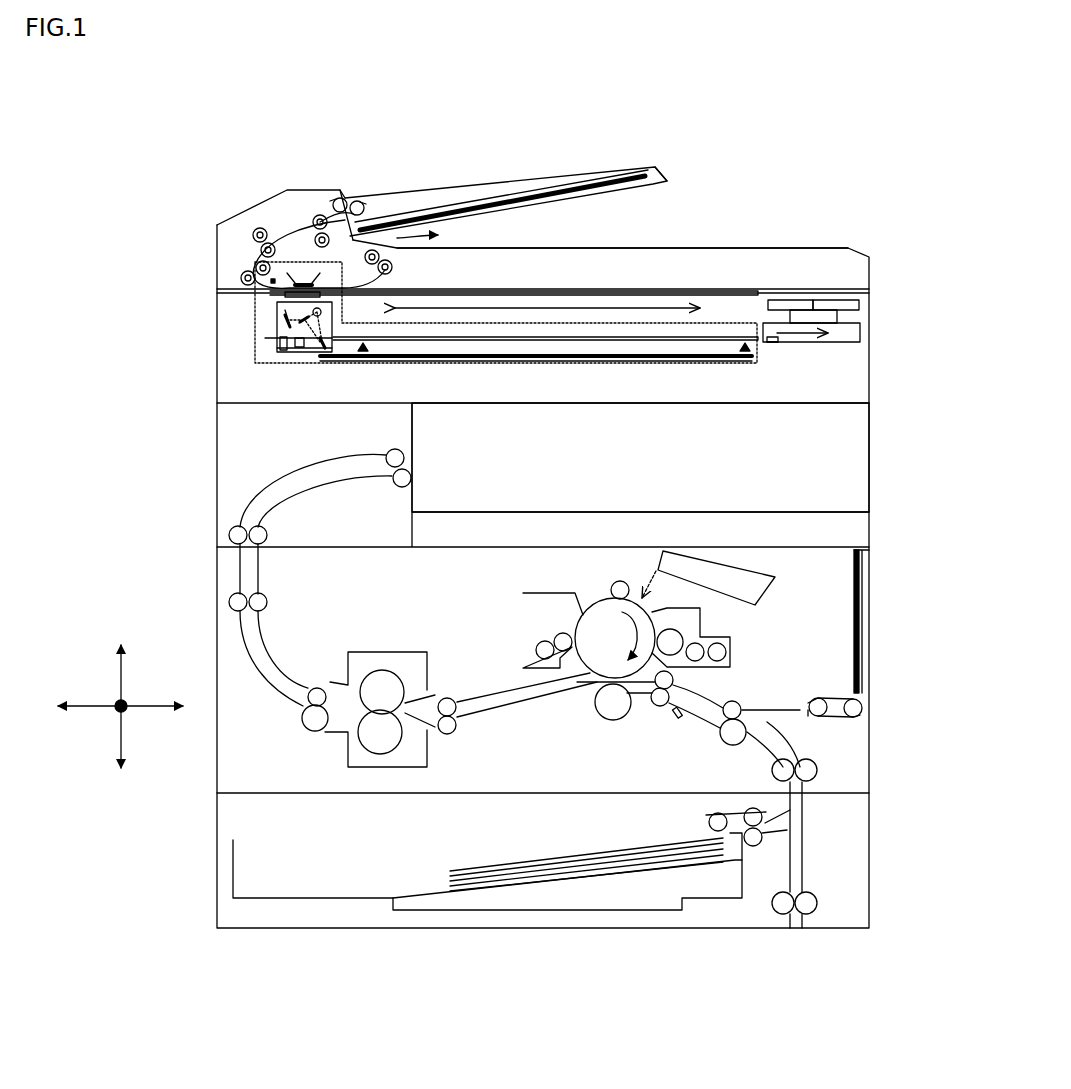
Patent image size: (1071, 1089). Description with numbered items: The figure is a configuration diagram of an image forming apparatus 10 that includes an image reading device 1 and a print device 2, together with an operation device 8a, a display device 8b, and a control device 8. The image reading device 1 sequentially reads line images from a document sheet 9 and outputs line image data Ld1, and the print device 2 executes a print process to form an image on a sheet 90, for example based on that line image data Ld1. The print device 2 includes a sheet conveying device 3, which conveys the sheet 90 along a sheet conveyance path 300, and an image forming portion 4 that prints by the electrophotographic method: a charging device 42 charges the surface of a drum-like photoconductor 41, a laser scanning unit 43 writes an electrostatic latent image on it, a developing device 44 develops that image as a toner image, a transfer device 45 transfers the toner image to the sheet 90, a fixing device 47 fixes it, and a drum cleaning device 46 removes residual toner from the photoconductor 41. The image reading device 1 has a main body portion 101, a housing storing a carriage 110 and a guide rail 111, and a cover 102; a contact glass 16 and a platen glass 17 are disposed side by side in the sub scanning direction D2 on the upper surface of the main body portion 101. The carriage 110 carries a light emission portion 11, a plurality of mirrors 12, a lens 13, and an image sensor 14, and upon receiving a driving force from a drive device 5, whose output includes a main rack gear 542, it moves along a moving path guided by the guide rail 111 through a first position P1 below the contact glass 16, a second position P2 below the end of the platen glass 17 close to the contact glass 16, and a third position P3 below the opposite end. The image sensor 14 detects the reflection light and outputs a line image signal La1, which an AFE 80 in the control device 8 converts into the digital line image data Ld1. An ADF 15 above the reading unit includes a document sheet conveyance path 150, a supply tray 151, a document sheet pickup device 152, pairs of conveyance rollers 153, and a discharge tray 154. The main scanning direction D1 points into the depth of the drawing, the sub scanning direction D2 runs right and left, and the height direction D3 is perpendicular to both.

The image reading device 1 is at (203, 197).
The print device 2 is at (880, 598).
The sheet conveying device 3 is at (830, 858).
The image forming portion 4 is at (332, 595).
The drive device 5 is at (255, 320).
The control device 8 is at (860, 338).
The operation device 8a is at (850, 292).
The display device 8b is at (860, 307).
The document sheet 9 is at (518, 192).
The image forming apparatus 10 is at (876, 156).
The light emission portion 11 is at (325, 348).
The mirrors 12 is at (317, 350).
The lens 13 is at (300, 350).
The image sensor 14 is at (283, 351).
The ADF 15 is at (264, 216).
The contact glass 16 is at (338, 278).
The platen glass 17 is at (733, 290).
The photoconductor 41 is at (598, 608).
The charging device 42 is at (626, 583).
The laser scanning unit 43 is at (773, 592).
The developing device 44 is at (703, 620).
The transfer device 45 is at (610, 722).
The drum cleaning device 46 is at (555, 594).
The fixing device 47 is at (330, 752).
The AFE 80 is at (780, 343).
The sheet 90 is at (522, 866).
The main body portion 101 is at (216, 386).
The cover 102 is at (217, 228).
The carriage 110 is at (277, 312).
The guide rail 111 is at (530, 340).
The document sheet conveyance path 150 is at (246, 262).
The supply tray 151 is at (667, 180).
The document sheet pickup device 152 is at (346, 200).
The conveyance rollers 153 is at (321, 214).
The discharge tray 154 is at (620, 247).
The sheet conveyance path 300 is at (710, 722).
The main rack gear 542 is at (498, 365).
The first position P1 is at (302, 370).
The second position P2 is at (367, 355).
The third position P3 is at (745, 355).
The line image data Ld1 is at (805, 335).
The line image signal La1 is at (770, 348).
The main scanning direction D1 is at (119, 700).
The sub scanning direction D2 is at (87, 710).
The height direction D3 is at (121, 730).